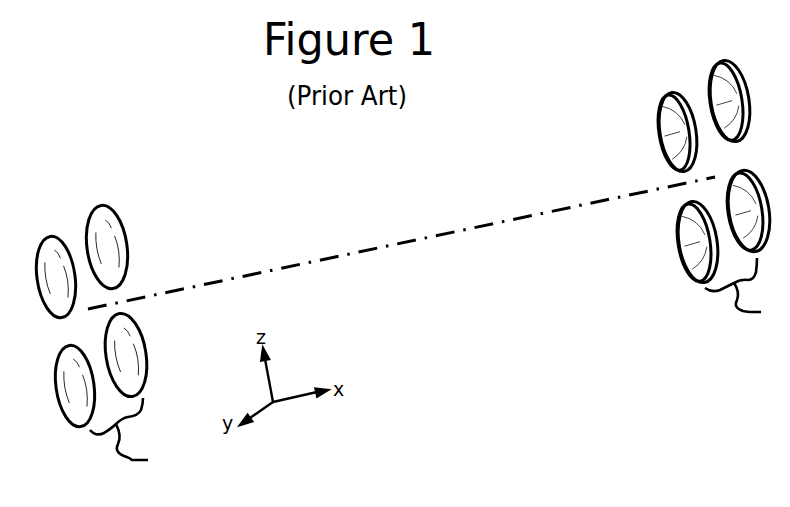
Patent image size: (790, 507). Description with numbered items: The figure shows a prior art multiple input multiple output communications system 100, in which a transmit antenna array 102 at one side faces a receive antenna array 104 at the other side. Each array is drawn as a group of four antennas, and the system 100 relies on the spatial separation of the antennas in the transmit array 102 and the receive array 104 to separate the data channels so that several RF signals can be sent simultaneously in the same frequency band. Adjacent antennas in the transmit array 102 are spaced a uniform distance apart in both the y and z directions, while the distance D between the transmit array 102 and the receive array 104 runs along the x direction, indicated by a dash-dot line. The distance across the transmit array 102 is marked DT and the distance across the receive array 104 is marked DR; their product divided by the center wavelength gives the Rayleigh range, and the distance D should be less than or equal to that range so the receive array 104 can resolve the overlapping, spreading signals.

The multiple input multiple output communications system 100 is at (100, 131).
The transmit antenna array 102 is at (146, 220).
The receive antenna array 104 is at (638, 224).
The distance between the transmit array and the receive array D is at (386, 248).
The distance across the transmit antenna array DT is at (133, 436).
The distance across the receive array DR is at (747, 295).